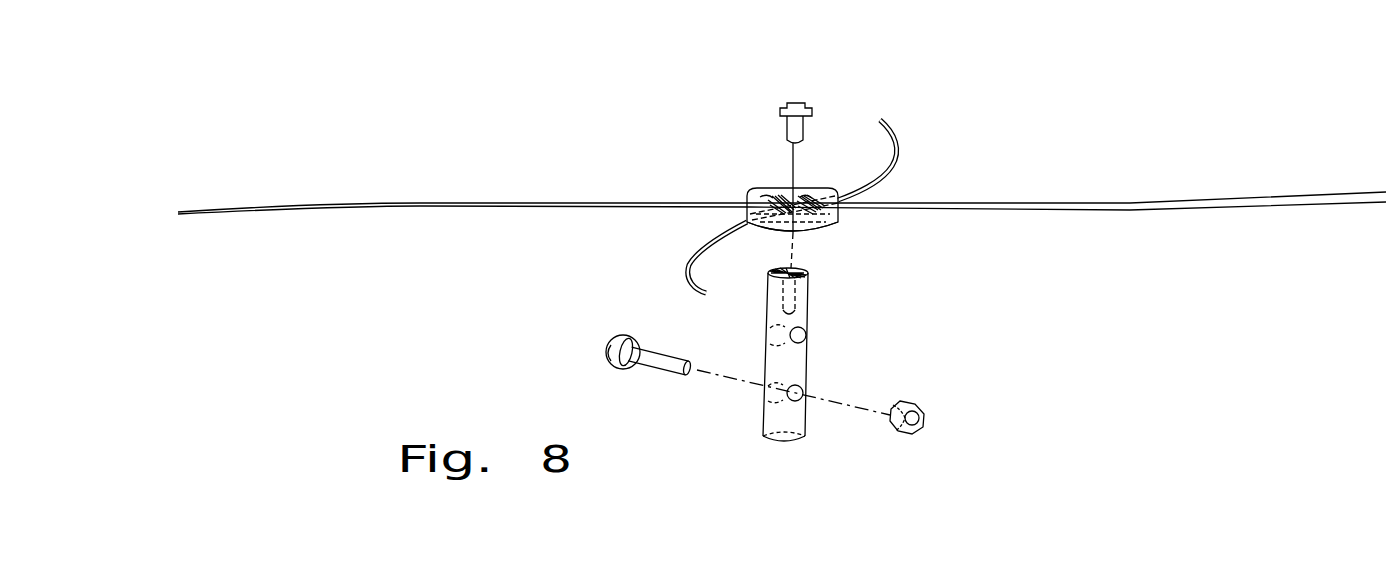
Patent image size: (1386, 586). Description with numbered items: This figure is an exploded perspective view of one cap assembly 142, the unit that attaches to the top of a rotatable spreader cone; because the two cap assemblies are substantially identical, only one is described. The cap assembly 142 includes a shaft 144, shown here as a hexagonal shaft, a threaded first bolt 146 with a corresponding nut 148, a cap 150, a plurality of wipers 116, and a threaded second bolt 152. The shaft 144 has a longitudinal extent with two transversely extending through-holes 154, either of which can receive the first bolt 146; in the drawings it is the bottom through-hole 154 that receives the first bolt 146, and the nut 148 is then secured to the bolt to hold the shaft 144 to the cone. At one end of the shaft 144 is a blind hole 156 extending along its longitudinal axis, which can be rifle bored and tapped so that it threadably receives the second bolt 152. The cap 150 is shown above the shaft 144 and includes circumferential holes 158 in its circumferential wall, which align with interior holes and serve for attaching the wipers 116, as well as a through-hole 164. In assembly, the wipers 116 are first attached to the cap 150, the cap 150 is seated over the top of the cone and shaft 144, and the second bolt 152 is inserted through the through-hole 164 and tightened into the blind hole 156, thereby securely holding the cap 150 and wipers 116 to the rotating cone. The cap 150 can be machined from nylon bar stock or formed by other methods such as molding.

The wipers 116 is at (897, 128).
The cap assembly 142 is at (970, 129).
The shaft 144 is at (786, 354).
The first bolt 146 is at (655, 365).
The nut 148 is at (915, 400).
The cap 150 is at (840, 213).
The second bolt 152 is at (798, 100).
The through-holes 154 is at (808, 393).
The blind hole 156 is at (781, 296).
The circumferential holes 158 is at (764, 196).
The through-hole 164 is at (803, 196).